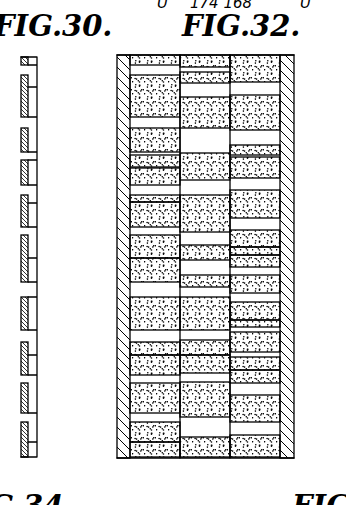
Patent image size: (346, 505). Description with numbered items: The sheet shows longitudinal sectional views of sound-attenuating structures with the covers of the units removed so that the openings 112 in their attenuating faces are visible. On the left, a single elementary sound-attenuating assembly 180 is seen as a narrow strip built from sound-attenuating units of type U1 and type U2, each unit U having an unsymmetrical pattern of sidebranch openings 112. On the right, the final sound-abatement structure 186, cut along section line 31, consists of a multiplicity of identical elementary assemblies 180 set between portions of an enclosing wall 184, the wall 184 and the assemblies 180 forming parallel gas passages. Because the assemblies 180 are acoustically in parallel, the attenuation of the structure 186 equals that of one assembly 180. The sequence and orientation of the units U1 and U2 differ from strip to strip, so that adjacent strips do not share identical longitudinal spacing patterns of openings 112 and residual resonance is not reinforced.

In FIG. 30, the openings 112 is at (38, 82).
In FIG. 32, the openings 112 is at (117, 70).
In FIG. 30, the elementary sound-attenuating assembly 180 is at (40, 255).
In FIG. 32, the elementary sound-attenuating assembly 180 is at (162, 459).
In FIG. 32, the enclosing wall 184 is at (286, 222).
In FIG. 32, the final sound-abatement structure 186 is at (295, 188).
In FIG. 32, the section line 31— 31 is at (95, 83).
In FIG. 30, the type U1 sound-attenuating unit U1 is at (38, 120).
In FIG. 32, the type U1 sound-attenuating unit U1 is at (306, 397).
In FIG. 30, the type U2 sound-attenuating unit U2 is at (38, 210).
In FIG. 32, the type U2 sound-attenuating unit U2 is at (276, 254).
In FIG. 32, the sound-attenuating unit U is at (90, 227).